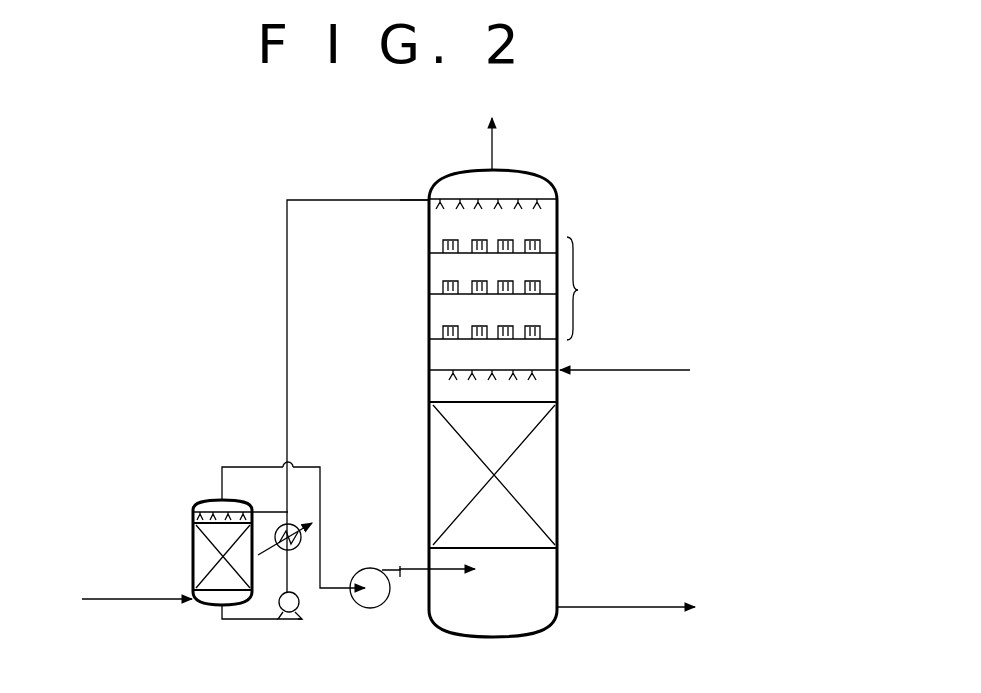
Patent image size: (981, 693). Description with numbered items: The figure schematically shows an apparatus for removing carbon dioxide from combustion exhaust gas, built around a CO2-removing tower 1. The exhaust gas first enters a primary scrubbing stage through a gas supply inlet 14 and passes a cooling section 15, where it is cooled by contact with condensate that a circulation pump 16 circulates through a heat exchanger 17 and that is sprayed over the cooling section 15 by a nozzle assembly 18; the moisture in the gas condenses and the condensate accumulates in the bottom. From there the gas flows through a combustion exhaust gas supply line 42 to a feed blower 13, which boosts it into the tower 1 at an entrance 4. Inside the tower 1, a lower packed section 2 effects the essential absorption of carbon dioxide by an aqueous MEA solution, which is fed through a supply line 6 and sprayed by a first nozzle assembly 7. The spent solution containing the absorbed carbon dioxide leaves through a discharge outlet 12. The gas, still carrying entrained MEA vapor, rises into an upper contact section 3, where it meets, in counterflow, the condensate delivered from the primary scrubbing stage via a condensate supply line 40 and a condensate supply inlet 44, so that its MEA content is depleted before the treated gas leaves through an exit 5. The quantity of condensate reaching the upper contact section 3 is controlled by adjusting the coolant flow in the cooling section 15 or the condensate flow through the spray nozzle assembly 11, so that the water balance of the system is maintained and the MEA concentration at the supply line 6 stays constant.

The CO2-removing tower 1 is at (567, 212).
The lower packed section 2 is at (562, 477).
The upper contact section 3 is at (517, 288).
The entrance 4 is at (426, 572).
The exit 5 is at (492, 168).
The supply line 6 is at (560, 357).
The first nozzle assembly 7 is at (437, 370).
The spray nozzle assembly 11 is at (511, 198).
The discharge outlet 12 is at (562, 603).
The feed blower 13 is at (360, 570).
The gas supply inlet 14 is at (195, 602).
The cooling section 15 is at (193, 555).
The circulation pump 16 is at (291, 621).
The heat exchanger 17 is at (314, 521).
The nozzle assembly 18 is at (207, 510).
The condensate supply line 40 is at (282, 278).
The combustion exhaust gas supply line 42 is at (242, 465).
The condensate supply inlet 44 is at (428, 198).